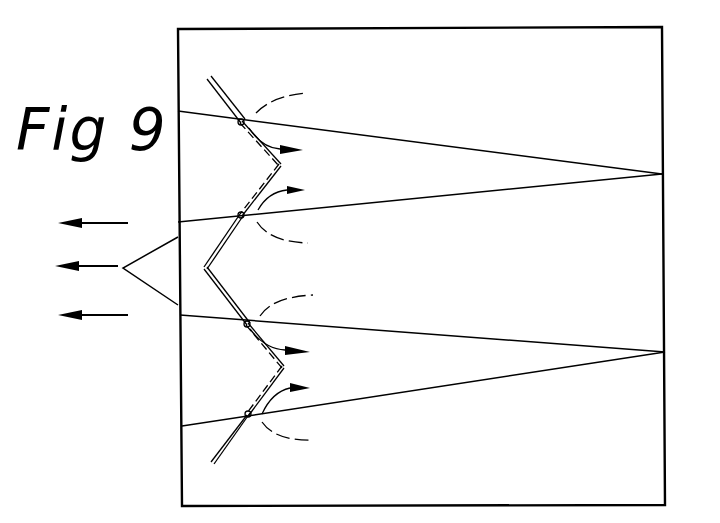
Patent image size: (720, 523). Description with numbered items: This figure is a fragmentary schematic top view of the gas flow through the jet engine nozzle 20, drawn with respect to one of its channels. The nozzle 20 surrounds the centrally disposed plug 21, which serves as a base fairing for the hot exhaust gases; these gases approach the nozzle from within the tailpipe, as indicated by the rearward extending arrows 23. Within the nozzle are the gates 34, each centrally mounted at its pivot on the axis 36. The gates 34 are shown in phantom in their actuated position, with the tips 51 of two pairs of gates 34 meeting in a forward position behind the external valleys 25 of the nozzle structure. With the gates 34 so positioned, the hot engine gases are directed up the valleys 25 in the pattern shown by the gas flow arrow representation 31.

The jet engine nozzle 20 is at (168, 49).
The plug 21 is at (146, 284).
The rearward extending arrows 23 is at (78, 218).
The external valleys 25 is at (408, 177).
The gas flow arrow representation 31 is at (304, 150).
The gates 34 is at (224, 112).
The axis 36 is at (241, 118).
The tips 51 is at (281, 165).